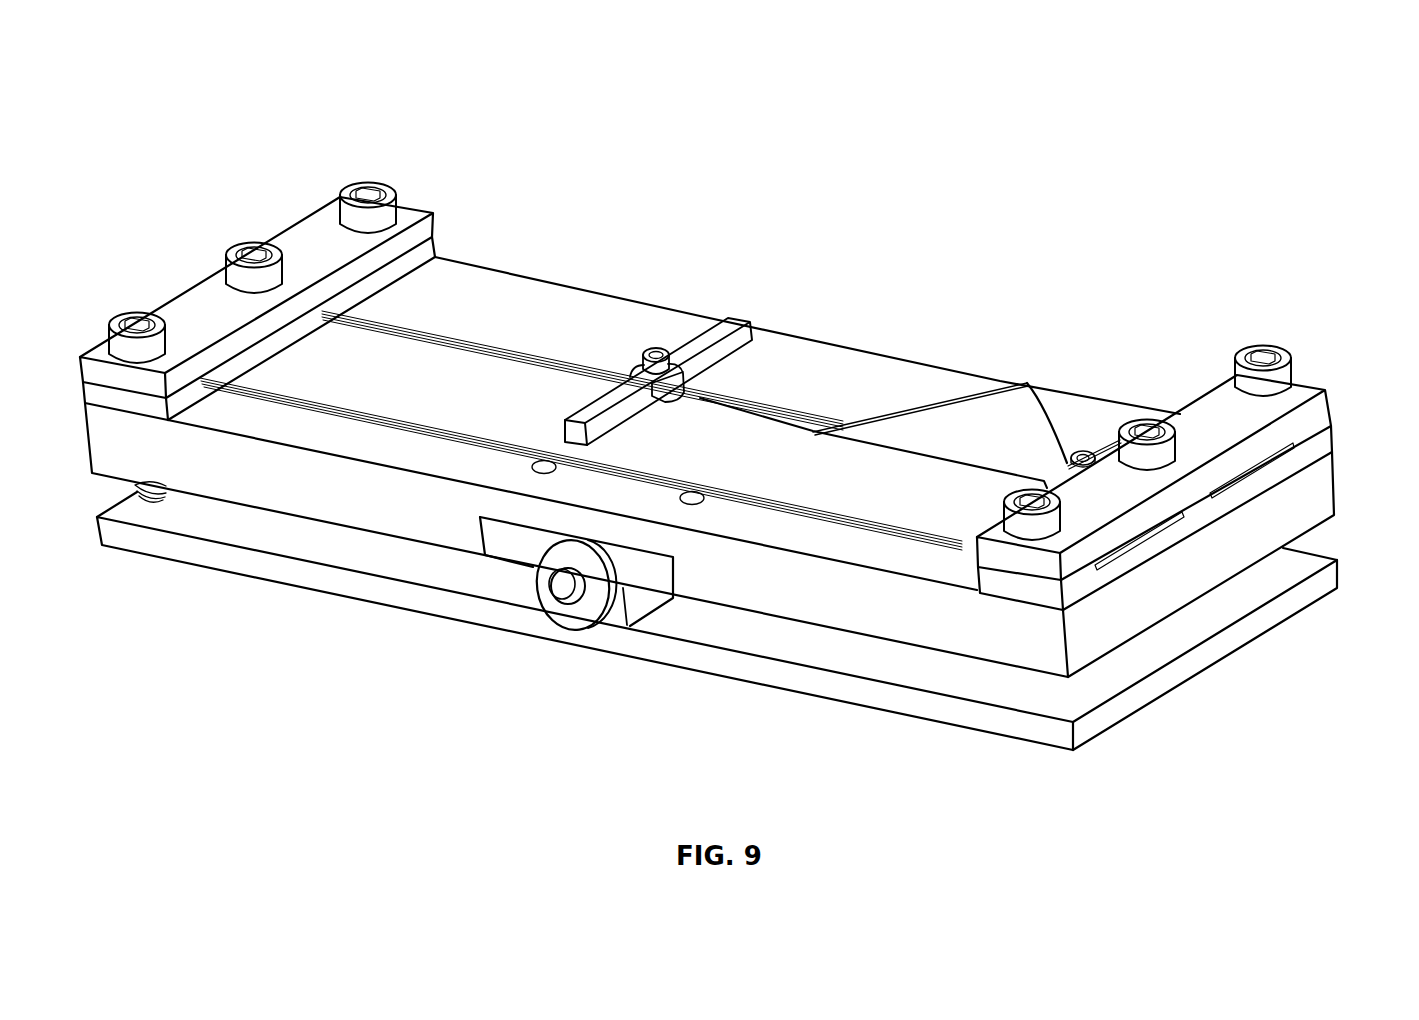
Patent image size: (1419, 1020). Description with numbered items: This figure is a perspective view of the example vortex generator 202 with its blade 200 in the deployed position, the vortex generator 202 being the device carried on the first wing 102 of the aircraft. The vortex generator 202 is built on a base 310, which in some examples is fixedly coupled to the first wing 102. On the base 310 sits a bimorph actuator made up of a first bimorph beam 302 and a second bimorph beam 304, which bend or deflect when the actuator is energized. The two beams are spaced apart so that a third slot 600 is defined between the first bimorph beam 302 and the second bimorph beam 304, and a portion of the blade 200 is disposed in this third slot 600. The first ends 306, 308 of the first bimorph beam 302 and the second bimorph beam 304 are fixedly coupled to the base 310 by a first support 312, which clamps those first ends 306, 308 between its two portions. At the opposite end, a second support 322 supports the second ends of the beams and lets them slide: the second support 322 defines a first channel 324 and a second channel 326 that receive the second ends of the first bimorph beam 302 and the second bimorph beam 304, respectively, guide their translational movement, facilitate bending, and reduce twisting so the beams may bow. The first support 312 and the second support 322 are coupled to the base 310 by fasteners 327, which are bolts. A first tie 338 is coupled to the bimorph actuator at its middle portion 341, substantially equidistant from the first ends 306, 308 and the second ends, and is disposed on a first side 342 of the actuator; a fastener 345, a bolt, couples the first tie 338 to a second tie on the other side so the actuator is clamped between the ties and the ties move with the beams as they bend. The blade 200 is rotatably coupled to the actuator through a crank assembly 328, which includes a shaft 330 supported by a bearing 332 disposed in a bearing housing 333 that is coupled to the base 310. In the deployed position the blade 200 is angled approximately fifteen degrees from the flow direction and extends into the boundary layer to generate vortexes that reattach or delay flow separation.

The vortex generator 202 is at (202, 98).
The first wing 102 is at (390, 588).
The second bimorph beam 304 is at (337, 380).
The first bimorph beam 302 is at (527, 318).
The third slot 600 is at (437, 345).
The blade 200 is at (996, 403).
The first end 306 is at (373, 290).
The first end 308 is at (237, 367).
The first support 312 is at (213, 288).
The base 310 is at (1128, 594).
The second support 322 is at (1313, 400).
The first channel 324 is at (1242, 468).
The second channel 326 is at (1143, 533).
The fasteners 327 is at (130, 322).
The first tie 338 is at (582, 424).
The fastener 345 is at (657, 348).
The middle portion 341 is at (752, 327).
The first side 342 is at (824, 366).
The crank assembly 328 is at (551, 624).
The shaft 330 is at (572, 590).
The bearing 332 is at (535, 595).
The bearing housing 333 is at (633, 603).